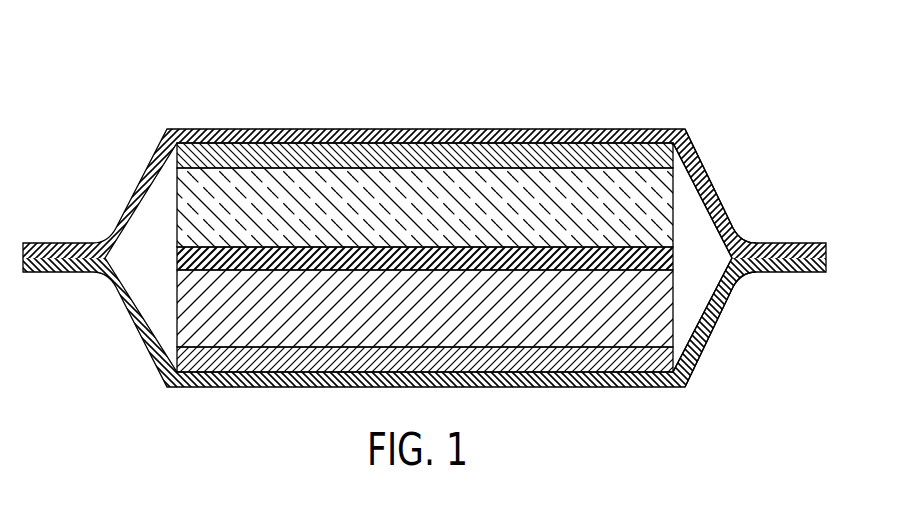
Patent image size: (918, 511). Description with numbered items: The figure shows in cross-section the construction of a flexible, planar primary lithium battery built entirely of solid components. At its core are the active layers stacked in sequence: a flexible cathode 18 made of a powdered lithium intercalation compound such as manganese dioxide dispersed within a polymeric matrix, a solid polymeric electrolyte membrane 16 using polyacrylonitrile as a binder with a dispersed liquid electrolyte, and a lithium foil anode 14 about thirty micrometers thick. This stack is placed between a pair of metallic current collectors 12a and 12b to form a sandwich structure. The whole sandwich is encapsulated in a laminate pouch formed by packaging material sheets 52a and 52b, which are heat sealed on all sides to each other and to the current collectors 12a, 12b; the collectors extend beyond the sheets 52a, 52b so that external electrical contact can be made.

The current collector 12a is at (502, 153).
The current collector 12b is at (337, 360).
The lithium foil anode 14 is at (603, 327).
The solid polymeric electrolyte membrane 16 is at (652, 245).
The flexible cathode 18 is at (242, 177).
The packaging material sheet 52a is at (718, 206).
The packaging material sheet 52b is at (716, 316).